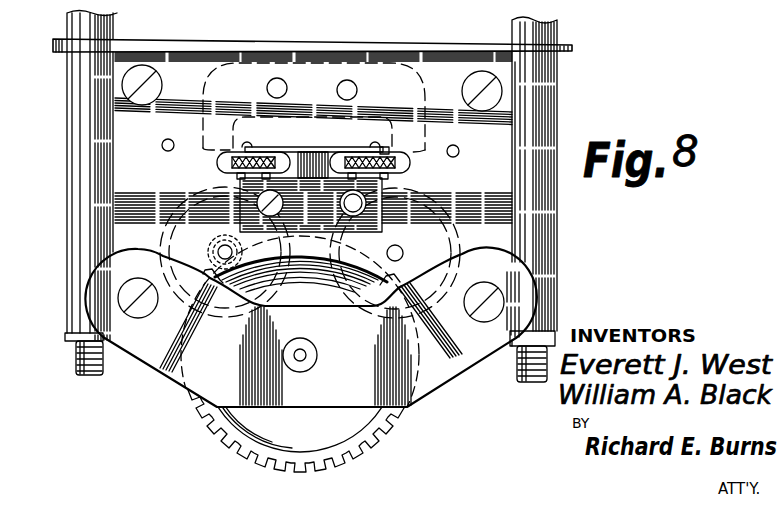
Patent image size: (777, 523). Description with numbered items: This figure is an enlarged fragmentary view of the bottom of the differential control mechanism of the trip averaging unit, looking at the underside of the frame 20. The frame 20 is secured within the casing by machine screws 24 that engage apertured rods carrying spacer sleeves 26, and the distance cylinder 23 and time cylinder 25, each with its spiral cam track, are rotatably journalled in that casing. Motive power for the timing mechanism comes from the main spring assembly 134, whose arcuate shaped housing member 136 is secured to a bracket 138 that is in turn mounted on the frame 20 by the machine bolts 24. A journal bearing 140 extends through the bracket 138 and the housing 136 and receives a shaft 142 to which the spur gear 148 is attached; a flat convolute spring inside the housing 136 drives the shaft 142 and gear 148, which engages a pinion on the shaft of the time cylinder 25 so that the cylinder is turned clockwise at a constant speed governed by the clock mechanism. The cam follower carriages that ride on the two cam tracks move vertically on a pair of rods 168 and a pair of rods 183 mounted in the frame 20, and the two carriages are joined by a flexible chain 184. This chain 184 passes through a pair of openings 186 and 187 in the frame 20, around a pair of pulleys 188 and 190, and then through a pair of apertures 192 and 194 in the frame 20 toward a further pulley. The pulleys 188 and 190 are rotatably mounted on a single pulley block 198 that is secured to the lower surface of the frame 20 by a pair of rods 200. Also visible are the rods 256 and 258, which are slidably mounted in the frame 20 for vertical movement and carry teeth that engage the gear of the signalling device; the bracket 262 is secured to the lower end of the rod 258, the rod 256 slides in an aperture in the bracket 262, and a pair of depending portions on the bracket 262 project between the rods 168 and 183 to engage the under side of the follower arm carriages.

The frame 20 is at (133, 182).
The distance cylinder 23 is at (458, 241).
The machine screws 24 is at (118, 299).
The time cylinder 25 is at (158, 229).
The spacer sleeves 26 is at (80, 92).
The main spring assembly 134 is at (425, 418).
The arcuate shaped housing member 136 is at (345, 423).
The bracket 138 is at (435, 380).
The journal bearing 140 is at (303, 346).
The shaft 142 is at (306, 355).
The spur gear 148 is at (240, 453).
The rods 168 is at (247, 143).
The rods 183 is at (376, 143).
The flexible chain 184 is at (394, 138).
The opening 186 is at (410, 162).
The opening 187 is at (217, 162).
The pulley 188 is at (408, 173).
The pulley 190 is at (225, 173).
The aperture 192 is at (296, 148).
The aperture 194 is at (326, 149).
The pulley block 198 is at (382, 215).
The rods 200 is at (275, 203).
The rod 256 is at (277, 88).
The rod 258 is at (348, 90).
The bracket 262 is at (229, 63).